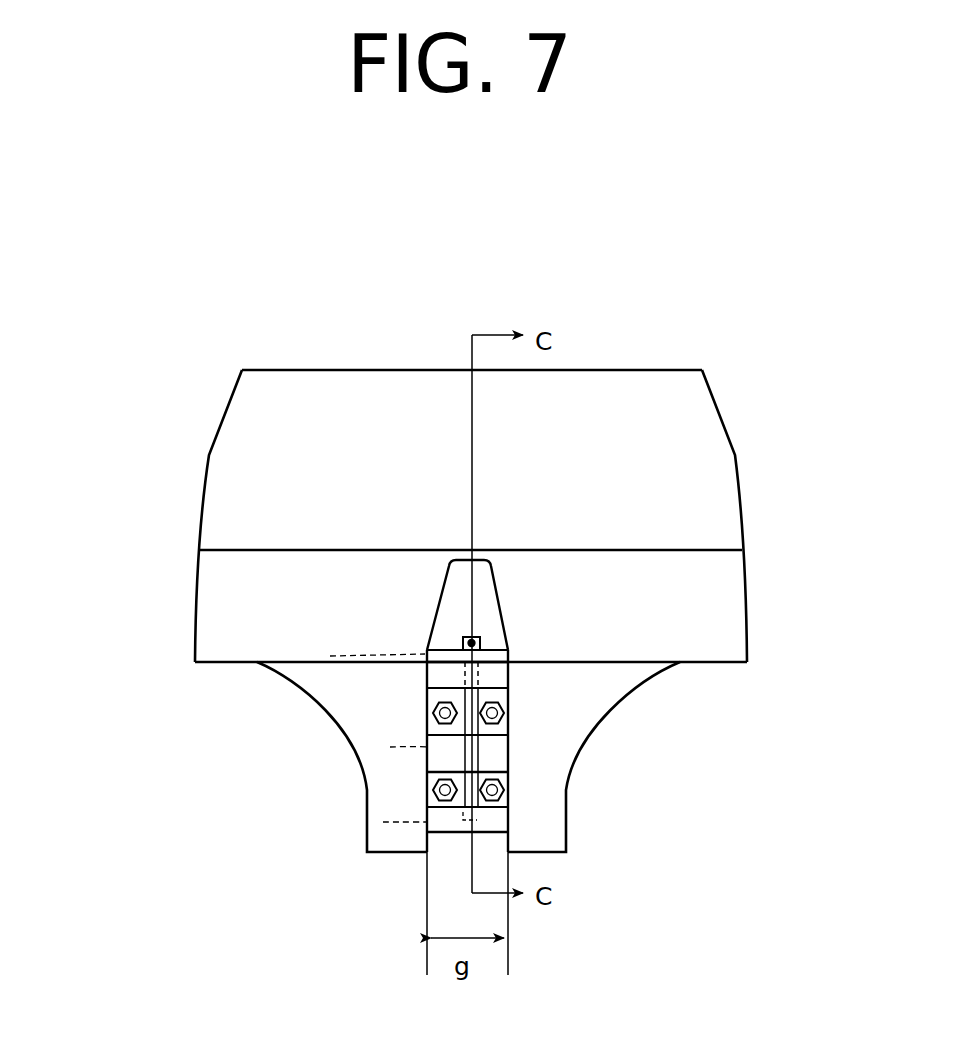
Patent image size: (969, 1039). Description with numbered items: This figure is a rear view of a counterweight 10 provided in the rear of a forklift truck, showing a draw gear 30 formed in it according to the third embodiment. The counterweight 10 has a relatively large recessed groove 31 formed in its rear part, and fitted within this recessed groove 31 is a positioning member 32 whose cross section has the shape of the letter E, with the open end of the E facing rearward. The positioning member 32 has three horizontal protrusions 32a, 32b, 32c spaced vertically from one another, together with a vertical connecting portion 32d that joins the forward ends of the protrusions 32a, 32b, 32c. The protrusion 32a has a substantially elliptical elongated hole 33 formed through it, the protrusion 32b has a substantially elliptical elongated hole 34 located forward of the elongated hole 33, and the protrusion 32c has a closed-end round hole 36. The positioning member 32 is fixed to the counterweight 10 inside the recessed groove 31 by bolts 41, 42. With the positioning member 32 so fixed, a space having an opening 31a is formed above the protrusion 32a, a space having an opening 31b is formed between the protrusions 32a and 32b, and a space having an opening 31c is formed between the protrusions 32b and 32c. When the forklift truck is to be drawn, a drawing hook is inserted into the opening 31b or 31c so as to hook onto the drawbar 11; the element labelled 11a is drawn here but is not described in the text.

The counterweight 10 is at (700, 405).
The drawbar 11 is at (427, 772).
The engagement projection 11a is at (425, 640).
The draw gear 30 is at (392, 596).
The recessed groove 31 is at (505, 590).
The opening 31a is at (505, 628).
The opening 31b is at (497, 695).
The opening 31c is at (503, 785).
The positioning member 32 is at (421, 697).
The protrusion 32a is at (497, 672).
The protrusion 32b is at (497, 755).
The protrusion 32c is at (497, 823).
The vertical connecting portion 32d is at (427, 718).
The elongated hole 33 is at (330, 656).
The elongated hole 34 is at (390, 747).
The round hole 36 is at (383, 822).
The bolt 41 is at (483, 728).
The bolt 42 is at (455, 797).